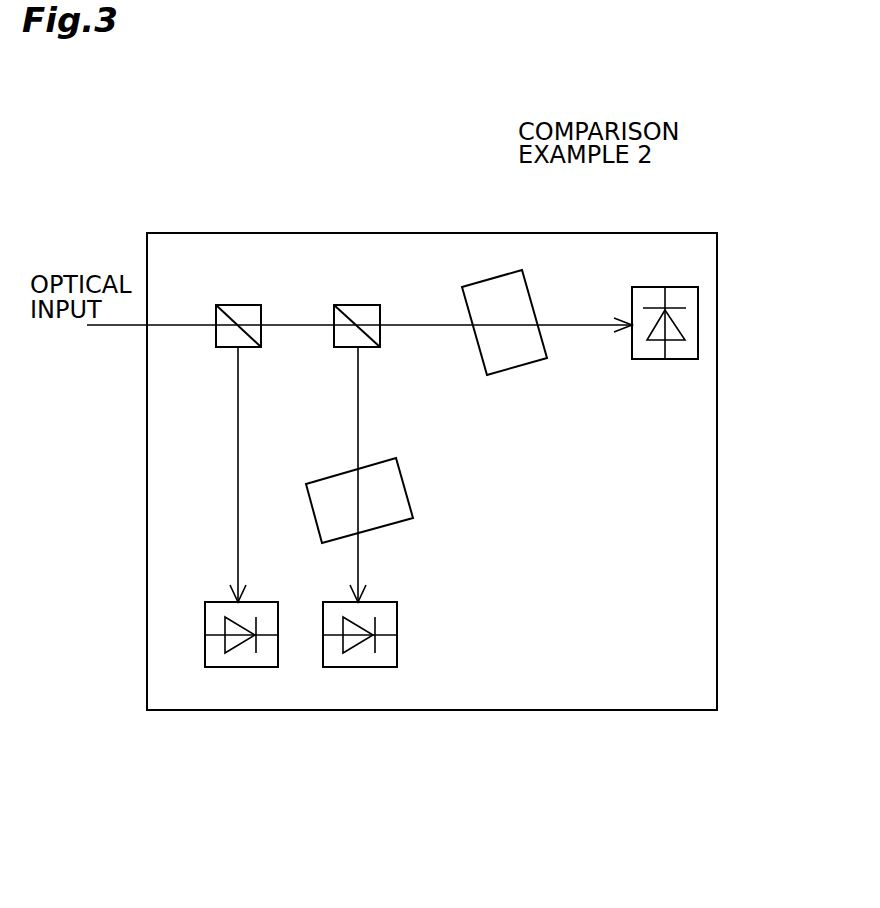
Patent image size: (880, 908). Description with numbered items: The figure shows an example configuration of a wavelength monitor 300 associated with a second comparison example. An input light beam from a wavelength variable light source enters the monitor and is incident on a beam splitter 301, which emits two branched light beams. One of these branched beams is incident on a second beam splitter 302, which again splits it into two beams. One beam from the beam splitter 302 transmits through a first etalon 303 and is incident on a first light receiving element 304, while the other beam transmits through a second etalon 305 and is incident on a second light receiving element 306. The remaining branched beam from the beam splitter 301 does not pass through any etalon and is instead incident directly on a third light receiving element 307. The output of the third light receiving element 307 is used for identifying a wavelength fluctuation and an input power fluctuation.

The wavelength monitor 300 is at (717, 198).
The beam splitter 301 is at (241, 305).
The beam splitter 302 is at (360, 305).
The first etalon 303 is at (495, 277).
The first light receiving element 304 is at (698, 331).
The second etalon 305 is at (403, 477).
The second light receiving element 306 is at (350, 667).
The third light receiving element 307 is at (232, 667).